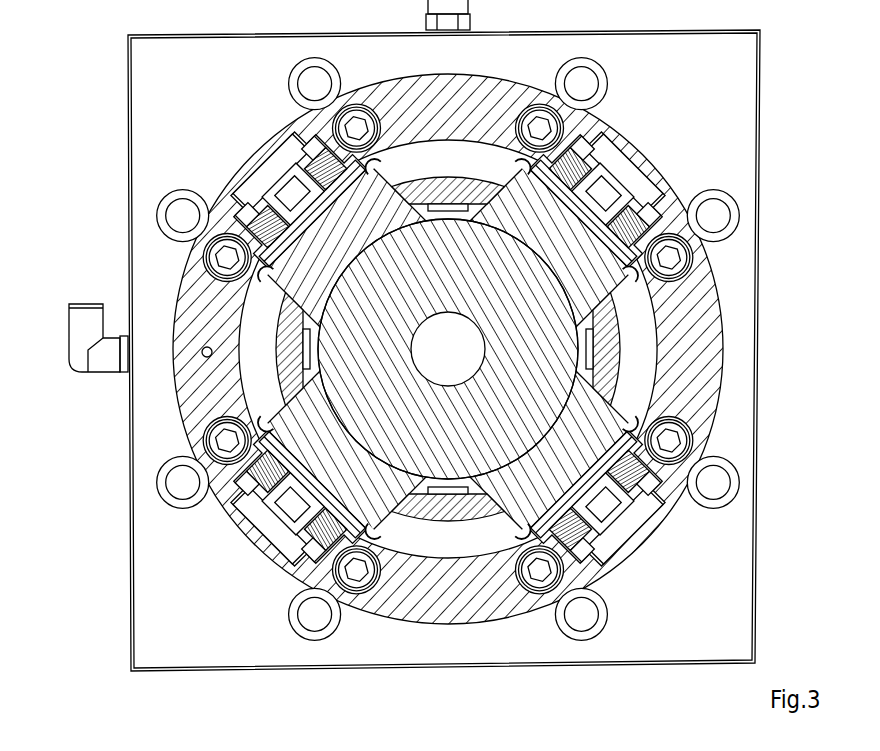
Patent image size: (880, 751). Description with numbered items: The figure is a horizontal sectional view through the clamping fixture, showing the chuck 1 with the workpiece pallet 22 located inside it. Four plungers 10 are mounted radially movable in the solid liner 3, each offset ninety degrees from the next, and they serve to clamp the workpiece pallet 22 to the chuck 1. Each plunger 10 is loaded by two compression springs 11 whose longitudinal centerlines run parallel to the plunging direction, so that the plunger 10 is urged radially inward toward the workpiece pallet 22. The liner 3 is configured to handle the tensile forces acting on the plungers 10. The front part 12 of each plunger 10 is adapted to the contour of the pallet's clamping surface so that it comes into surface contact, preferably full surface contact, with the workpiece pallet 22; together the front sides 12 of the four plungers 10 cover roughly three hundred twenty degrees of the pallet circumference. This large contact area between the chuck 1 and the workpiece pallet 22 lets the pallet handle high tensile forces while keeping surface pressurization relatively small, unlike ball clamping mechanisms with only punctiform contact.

The chuck 1 is at (414, 355).
The liner 3 is at (454, 349).
The plunger 10 is at (447, 354).
The compression spring 11 is at (442, 355).
The front part of the plunger 12 is at (448, 349).
The workpiece pallet 22 is at (448, 349).